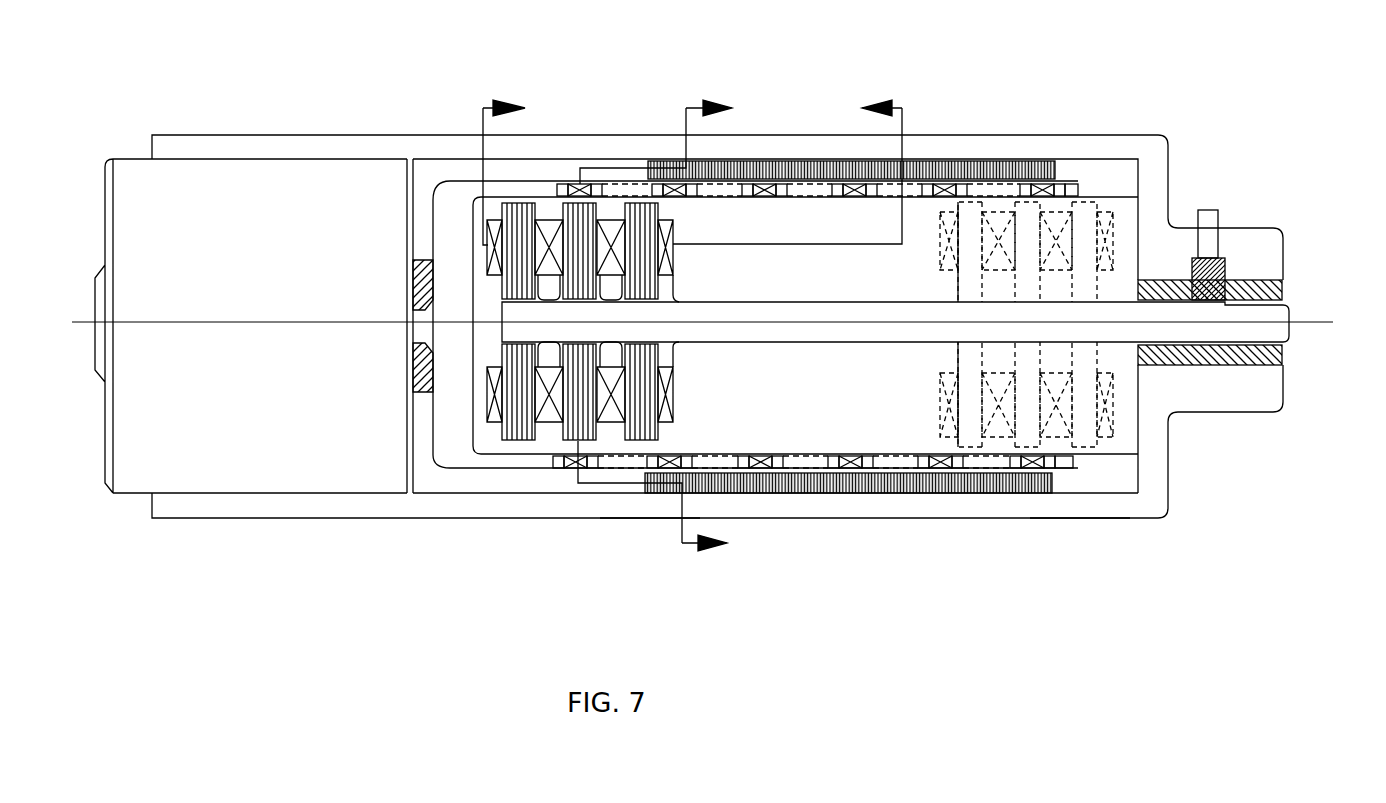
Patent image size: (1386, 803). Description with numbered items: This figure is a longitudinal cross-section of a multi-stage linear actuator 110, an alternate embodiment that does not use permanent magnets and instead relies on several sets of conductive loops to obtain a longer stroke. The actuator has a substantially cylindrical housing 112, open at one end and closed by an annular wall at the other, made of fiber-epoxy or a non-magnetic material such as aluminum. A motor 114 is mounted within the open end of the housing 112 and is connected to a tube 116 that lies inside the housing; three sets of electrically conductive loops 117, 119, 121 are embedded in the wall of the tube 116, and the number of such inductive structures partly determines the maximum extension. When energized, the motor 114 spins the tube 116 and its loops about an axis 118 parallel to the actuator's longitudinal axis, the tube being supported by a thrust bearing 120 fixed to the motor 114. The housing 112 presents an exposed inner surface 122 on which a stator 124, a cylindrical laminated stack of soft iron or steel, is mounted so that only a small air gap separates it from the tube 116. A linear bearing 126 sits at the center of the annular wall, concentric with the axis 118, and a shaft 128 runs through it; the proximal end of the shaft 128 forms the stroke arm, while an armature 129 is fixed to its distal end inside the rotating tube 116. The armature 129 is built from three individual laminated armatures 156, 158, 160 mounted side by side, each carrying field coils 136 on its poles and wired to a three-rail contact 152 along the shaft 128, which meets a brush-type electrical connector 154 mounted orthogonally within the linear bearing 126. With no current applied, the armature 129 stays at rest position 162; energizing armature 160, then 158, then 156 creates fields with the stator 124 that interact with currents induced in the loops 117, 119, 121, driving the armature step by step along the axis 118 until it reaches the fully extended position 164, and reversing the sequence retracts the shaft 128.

The multi-stage actuator 110 is at (716, 77).
The housing 112 is at (356, 135).
The motor 114 is at (105, 230).
The tube 116 is at (433, 222).
The electrically conductive loops 117 is at (555, 467).
The axis 118 is at (1296, 322).
The electrically conductive loops 119 is at (803, 462).
The thrust bearing 120 is at (413, 295).
The electrically conductive loops 121 is at (990, 460).
The inner surface 122 is at (468, 495).
The stator 124 is at (823, 162).
The linear bearing 126 is at (1262, 280).
The shaft 128 is at (880, 343).
The armature 129 is at (678, 268).
The field coils 136 is at (675, 403).
The contact 152 is at (786, 300).
The electrical connector 154 is at (1213, 210).
The individual armature 156 is at (490, 398).
The individual armature 158 is at (573, 203).
The individual armature 160 is at (657, 347).
The rest position 162 is at (651, 533).
The fully extended position 164 is at (1077, 527).